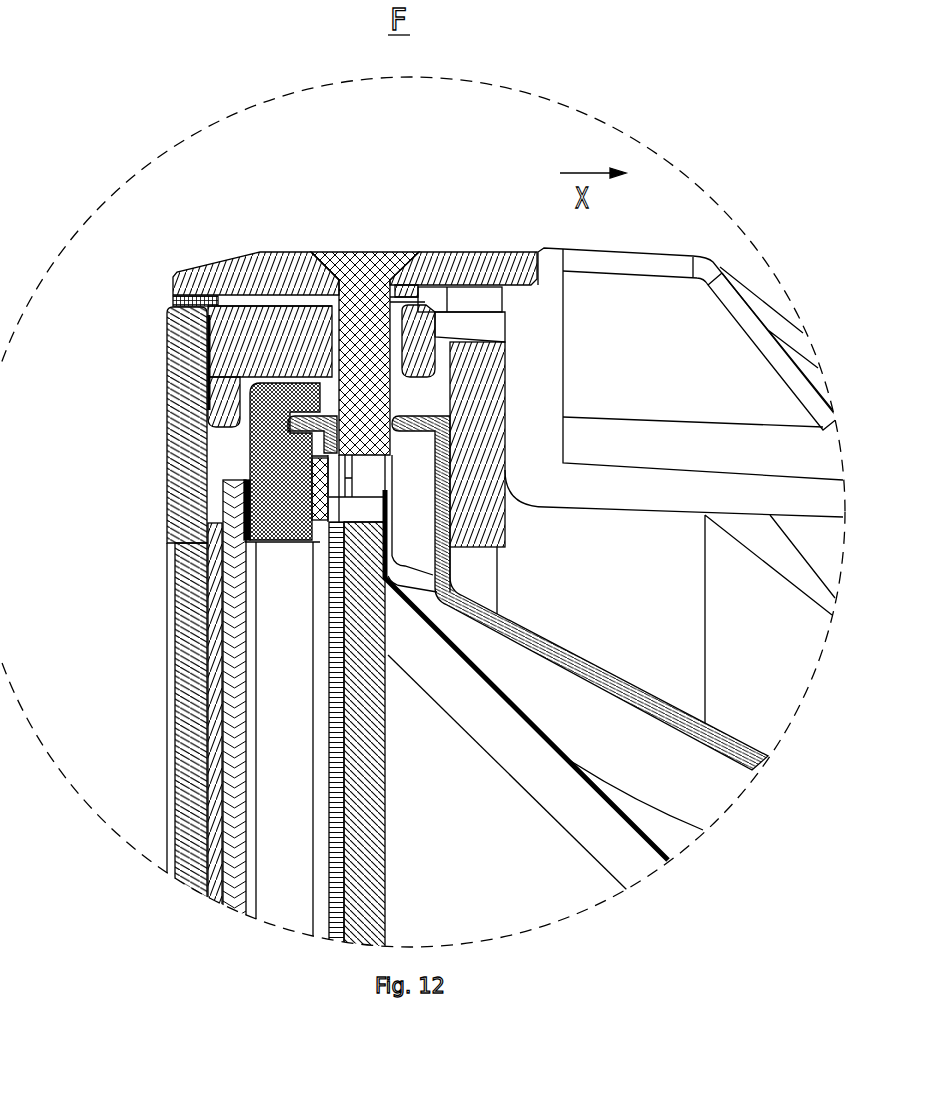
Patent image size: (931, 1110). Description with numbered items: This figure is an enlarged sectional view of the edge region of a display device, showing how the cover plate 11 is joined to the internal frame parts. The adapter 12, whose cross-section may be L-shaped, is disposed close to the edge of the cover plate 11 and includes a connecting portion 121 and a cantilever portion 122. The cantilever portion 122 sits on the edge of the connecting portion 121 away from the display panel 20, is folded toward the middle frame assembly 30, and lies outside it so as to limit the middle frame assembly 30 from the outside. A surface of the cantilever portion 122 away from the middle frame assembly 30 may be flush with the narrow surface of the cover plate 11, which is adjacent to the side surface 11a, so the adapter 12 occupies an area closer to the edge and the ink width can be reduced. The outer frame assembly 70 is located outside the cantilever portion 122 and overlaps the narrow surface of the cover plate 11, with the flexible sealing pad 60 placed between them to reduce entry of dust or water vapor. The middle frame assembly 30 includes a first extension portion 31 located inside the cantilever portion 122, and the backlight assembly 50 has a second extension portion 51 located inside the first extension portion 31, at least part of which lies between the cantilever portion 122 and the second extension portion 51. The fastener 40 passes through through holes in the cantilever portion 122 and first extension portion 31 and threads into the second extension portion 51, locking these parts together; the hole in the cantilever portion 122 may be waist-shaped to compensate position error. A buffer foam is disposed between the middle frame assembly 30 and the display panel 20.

The cover plate 11 is at (148, 638).
The side surface 11a is at (215, 458).
The adapter 12 is at (182, 371).
The connecting portion 121 is at (222, 403).
The cantilever portion 122 is at (290, 340).
The display panel 20 is at (232, 687).
The middle frame assembly 30 is at (283, 498).
The first extension portion 31 is at (455, 397).
The fastener 40 is at (367, 253).
The backlight assembly 50 is at (513, 627).
The second extension portion 51 is at (331, 415).
The flexible sealing pad 60 is at (180, 302).
The outer frame assembly 70 is at (243, 275).